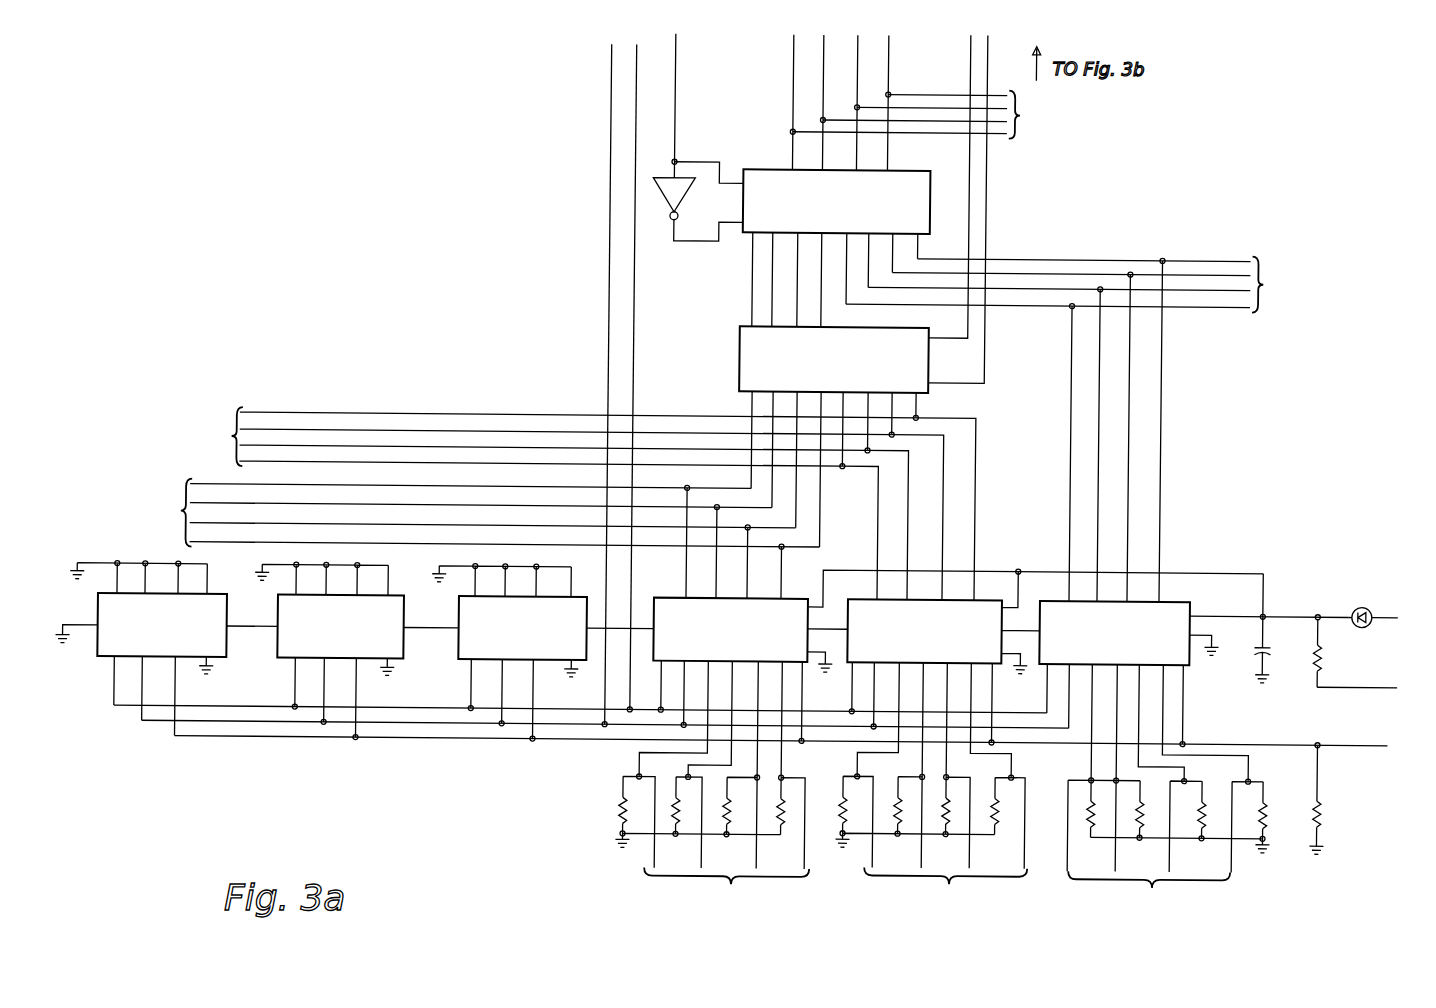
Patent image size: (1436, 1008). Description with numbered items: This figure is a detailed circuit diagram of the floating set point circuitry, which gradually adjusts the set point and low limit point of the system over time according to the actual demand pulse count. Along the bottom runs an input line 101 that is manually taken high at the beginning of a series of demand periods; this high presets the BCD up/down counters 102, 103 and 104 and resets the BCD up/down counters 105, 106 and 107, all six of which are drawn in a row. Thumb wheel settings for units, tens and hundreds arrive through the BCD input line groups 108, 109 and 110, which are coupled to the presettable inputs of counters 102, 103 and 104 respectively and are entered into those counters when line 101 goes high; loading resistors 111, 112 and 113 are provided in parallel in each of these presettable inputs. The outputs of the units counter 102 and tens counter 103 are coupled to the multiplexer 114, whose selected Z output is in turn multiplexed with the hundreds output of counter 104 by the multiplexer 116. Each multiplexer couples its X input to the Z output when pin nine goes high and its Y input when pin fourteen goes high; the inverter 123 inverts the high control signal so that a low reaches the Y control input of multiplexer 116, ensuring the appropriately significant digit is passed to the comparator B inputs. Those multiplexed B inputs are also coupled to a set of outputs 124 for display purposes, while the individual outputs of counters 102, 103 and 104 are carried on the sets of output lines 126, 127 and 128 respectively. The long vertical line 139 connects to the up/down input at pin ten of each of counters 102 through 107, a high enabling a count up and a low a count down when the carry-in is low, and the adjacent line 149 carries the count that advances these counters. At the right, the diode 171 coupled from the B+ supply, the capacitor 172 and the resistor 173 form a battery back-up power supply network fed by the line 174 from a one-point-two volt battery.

The input line 101 is at (1370, 744).
The BCD up/down counter 102 is at (803, 598).
The BCD up/down counter 103 is at (988, 598).
The BCD up/down counter 104 is at (1182, 598).
The BCD up/down counter 105 is at (101, 661).
The BCD up/down counter 106 is at (280, 661).
The BCD up/down counter 107 is at (461, 661).
The BCD input line group 108 is at (684, 846).
The BCD input line group 109 is at (913, 848).
The BCD input line group 110 is at (1145, 851).
The loading resistors 111 is at (613, 805).
The loading resistors 112 is at (834, 803).
The loading resistors 113 is at (1062, 803).
The multiplexer 114 is at (738, 352).
The multiplexer 116 is at (762, 169).
The inverter 123 is at (668, 205).
The set of outputs 124 is at (1019, 114).
The set of output lines 126 is at (168, 507).
The set of output lines 127 is at (222, 431).
The set of output lines 128 is at (1271, 279).
The line 139 is at (602, 327).
The line 149 is at (688, 384).
The diode 171 is at (1362, 602).
The capacitor 172 is at (1258, 648).
The resistor 173 is at (1325, 666).
The line 174 is at (1392, 686).